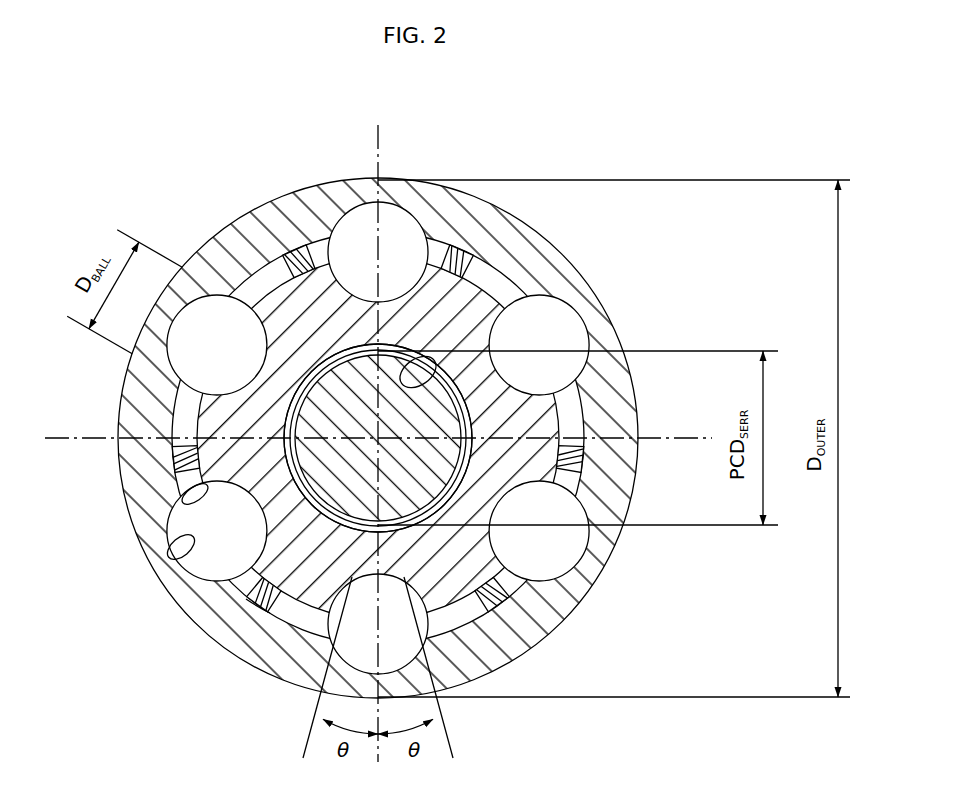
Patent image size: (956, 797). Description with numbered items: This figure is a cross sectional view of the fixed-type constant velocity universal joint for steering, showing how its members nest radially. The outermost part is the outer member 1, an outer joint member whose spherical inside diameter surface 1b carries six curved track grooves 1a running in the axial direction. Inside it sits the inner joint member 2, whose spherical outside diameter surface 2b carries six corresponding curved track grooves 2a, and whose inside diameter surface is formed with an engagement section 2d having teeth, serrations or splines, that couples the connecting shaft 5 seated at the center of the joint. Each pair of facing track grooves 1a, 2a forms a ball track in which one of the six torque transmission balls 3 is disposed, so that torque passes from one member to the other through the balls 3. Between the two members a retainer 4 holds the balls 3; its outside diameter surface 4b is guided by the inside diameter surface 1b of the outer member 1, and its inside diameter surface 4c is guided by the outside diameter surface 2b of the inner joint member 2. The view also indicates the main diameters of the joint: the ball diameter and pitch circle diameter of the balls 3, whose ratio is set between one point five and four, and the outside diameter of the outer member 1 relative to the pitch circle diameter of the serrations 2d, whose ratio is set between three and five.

The outer member 1 is at (116, 409).
The track grooves 1a is at (166, 562).
The spherical inside diameter surface 1b is at (183, 502).
The inner joint member 2 is at (500, 330).
The track grooves 2a is at (498, 333).
The spherical outside diameter surface 2b is at (470, 388).
The engagement section 2d is at (432, 352).
The torque transmission balls 3 is at (336, 212).
The retainer 4 is at (357, 490).
The outside diameter surface 4b is at (258, 598).
The inside diameter surface 4c is at (260, 613).
The connecting shaft 5 is at (336, 417).